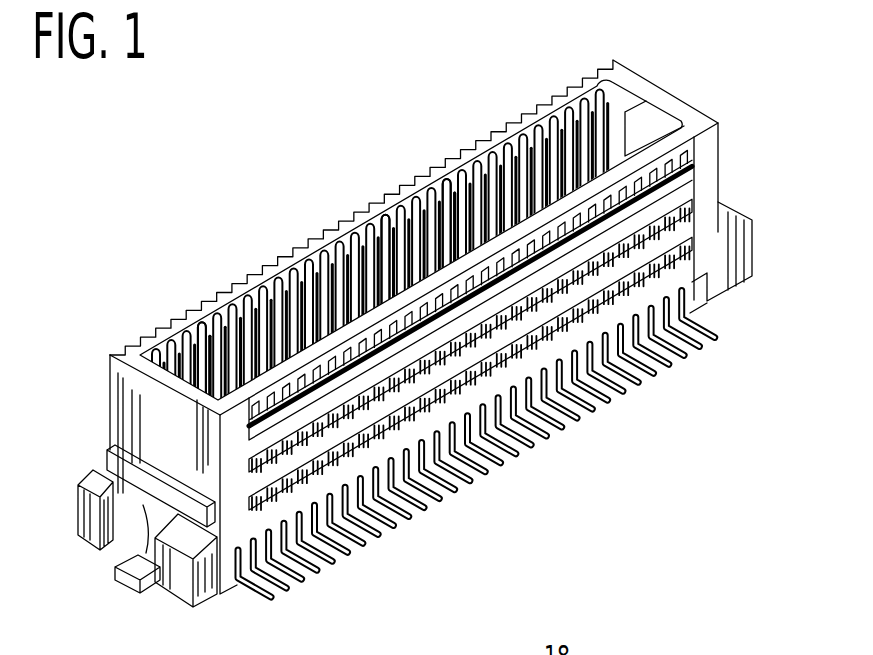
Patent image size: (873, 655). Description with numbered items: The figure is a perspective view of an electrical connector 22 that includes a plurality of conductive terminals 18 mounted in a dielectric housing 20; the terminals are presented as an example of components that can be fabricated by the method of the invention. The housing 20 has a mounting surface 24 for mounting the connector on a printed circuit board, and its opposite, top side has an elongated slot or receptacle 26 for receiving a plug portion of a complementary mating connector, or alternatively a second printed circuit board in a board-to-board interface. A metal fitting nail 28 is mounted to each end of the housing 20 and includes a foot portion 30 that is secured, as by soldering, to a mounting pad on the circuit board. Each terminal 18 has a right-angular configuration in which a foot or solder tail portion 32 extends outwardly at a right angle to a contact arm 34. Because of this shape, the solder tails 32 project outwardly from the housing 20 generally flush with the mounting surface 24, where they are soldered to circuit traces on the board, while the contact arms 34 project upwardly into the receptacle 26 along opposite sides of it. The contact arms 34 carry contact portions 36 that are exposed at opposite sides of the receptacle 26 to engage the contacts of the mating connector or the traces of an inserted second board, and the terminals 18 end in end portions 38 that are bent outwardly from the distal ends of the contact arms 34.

The conductive terminals 18 is at (298, 282).
The dielectric housing 20 is at (148, 410).
The electrical connector 22 is at (480, 95).
The mounting surface 24 is at (723, 298).
The slot or receptacle 26 is at (618, 95).
The fitting nail 28 is at (148, 507).
The foot portion 30 is at (145, 568).
The solder tail portion 32 is at (385, 525).
The contact arm 34 is at (418, 213).
The contact portions 36 is at (481, 145).
The end portions 38 is at (236, 325).